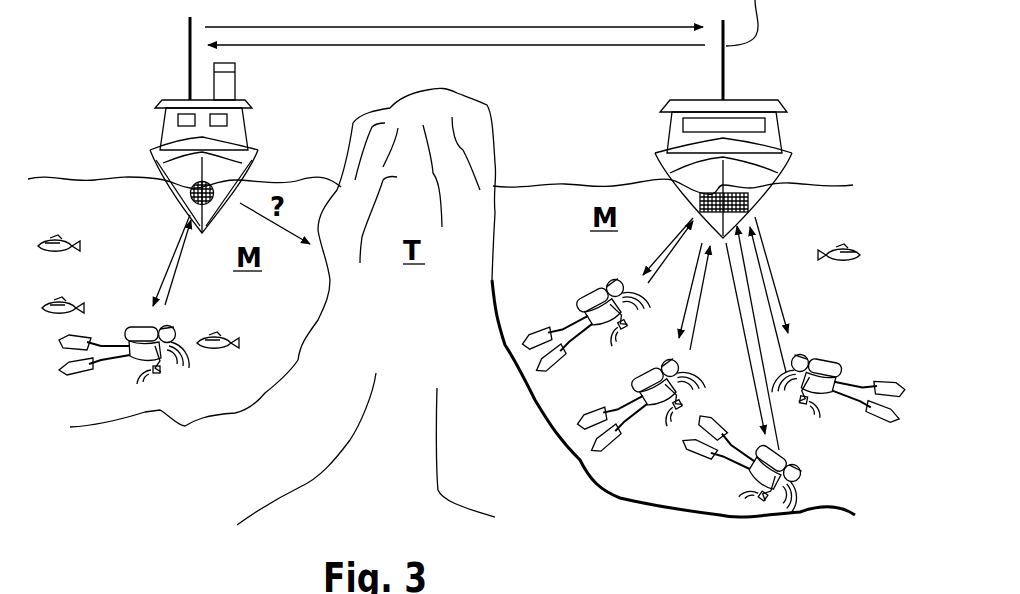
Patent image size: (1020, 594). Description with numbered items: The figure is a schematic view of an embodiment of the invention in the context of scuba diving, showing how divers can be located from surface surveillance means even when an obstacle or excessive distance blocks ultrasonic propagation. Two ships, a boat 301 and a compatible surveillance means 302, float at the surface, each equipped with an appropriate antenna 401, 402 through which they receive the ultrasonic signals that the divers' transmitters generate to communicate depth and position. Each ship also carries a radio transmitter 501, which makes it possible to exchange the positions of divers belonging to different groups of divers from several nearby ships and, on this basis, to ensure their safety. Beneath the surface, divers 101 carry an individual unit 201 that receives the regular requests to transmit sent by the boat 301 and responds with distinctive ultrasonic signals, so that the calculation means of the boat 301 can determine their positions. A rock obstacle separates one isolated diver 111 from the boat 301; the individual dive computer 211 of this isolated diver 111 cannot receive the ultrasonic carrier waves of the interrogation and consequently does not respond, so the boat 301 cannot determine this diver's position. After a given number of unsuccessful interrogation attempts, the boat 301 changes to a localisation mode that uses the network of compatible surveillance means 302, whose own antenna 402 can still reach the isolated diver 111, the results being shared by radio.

The diver 101 is at (142, 325).
The isolated diver 111 is at (590, 298).
The individual unit 201 is at (142, 375).
The individual dive computer 211 is at (618, 330).
The boat 301 is at (173, 148).
The compatible surveillance means 302 is at (765, 158).
The antenna 401 is at (186, 196).
The antenna 402 is at (748, 200).
The radio transmitter 501 is at (188, 40).